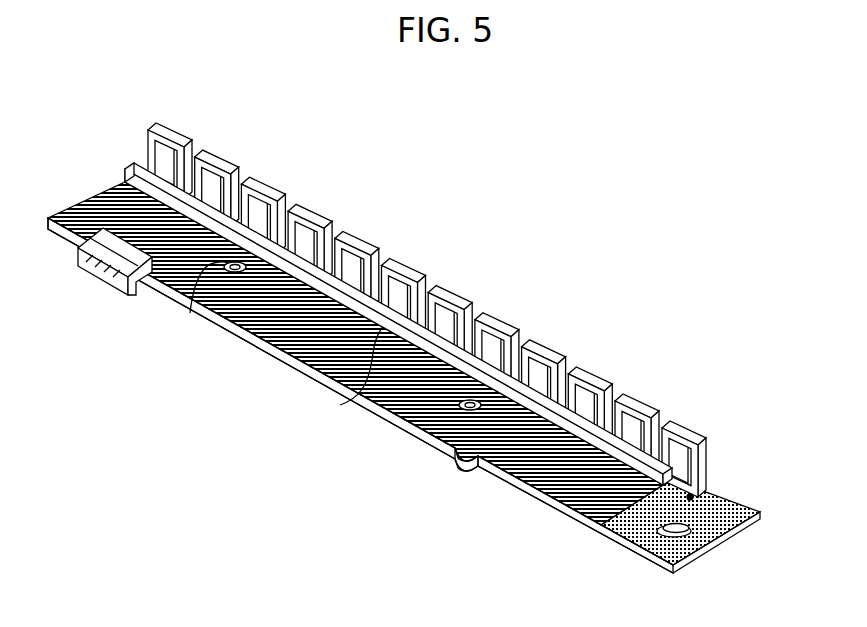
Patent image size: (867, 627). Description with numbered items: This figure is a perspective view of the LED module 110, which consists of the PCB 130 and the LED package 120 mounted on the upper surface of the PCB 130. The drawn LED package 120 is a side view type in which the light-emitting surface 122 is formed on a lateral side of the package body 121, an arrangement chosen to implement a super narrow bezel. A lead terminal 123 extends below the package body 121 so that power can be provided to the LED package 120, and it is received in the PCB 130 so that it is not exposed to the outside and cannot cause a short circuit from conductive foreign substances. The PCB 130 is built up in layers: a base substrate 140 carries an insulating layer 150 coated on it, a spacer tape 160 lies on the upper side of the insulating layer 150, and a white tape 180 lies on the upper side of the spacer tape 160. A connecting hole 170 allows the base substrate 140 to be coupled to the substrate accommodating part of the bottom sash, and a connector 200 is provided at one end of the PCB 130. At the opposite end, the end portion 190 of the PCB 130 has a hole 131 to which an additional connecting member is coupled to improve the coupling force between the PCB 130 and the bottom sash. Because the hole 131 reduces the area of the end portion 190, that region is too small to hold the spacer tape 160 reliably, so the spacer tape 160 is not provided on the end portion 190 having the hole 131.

The LED module 110 is at (475, 115).
The LED package 120 is at (790, 379).
The package body 121 is at (690, 430).
The light-emitting surface 122 is at (687, 462).
The lead terminal 123 is at (696, 496).
The PCB 130 is at (518, 592).
The hole 131 is at (717, 537).
The base substrate 140 is at (282, 365).
The insulating layer 150 is at (490, 467).
The spacer tape 160 is at (417, 414).
The connecting hole 170 is at (190, 313).
The white tape 180 is at (340, 405).
The end portion 190 is at (614, 531).
The connector 200 is at (82, 267).